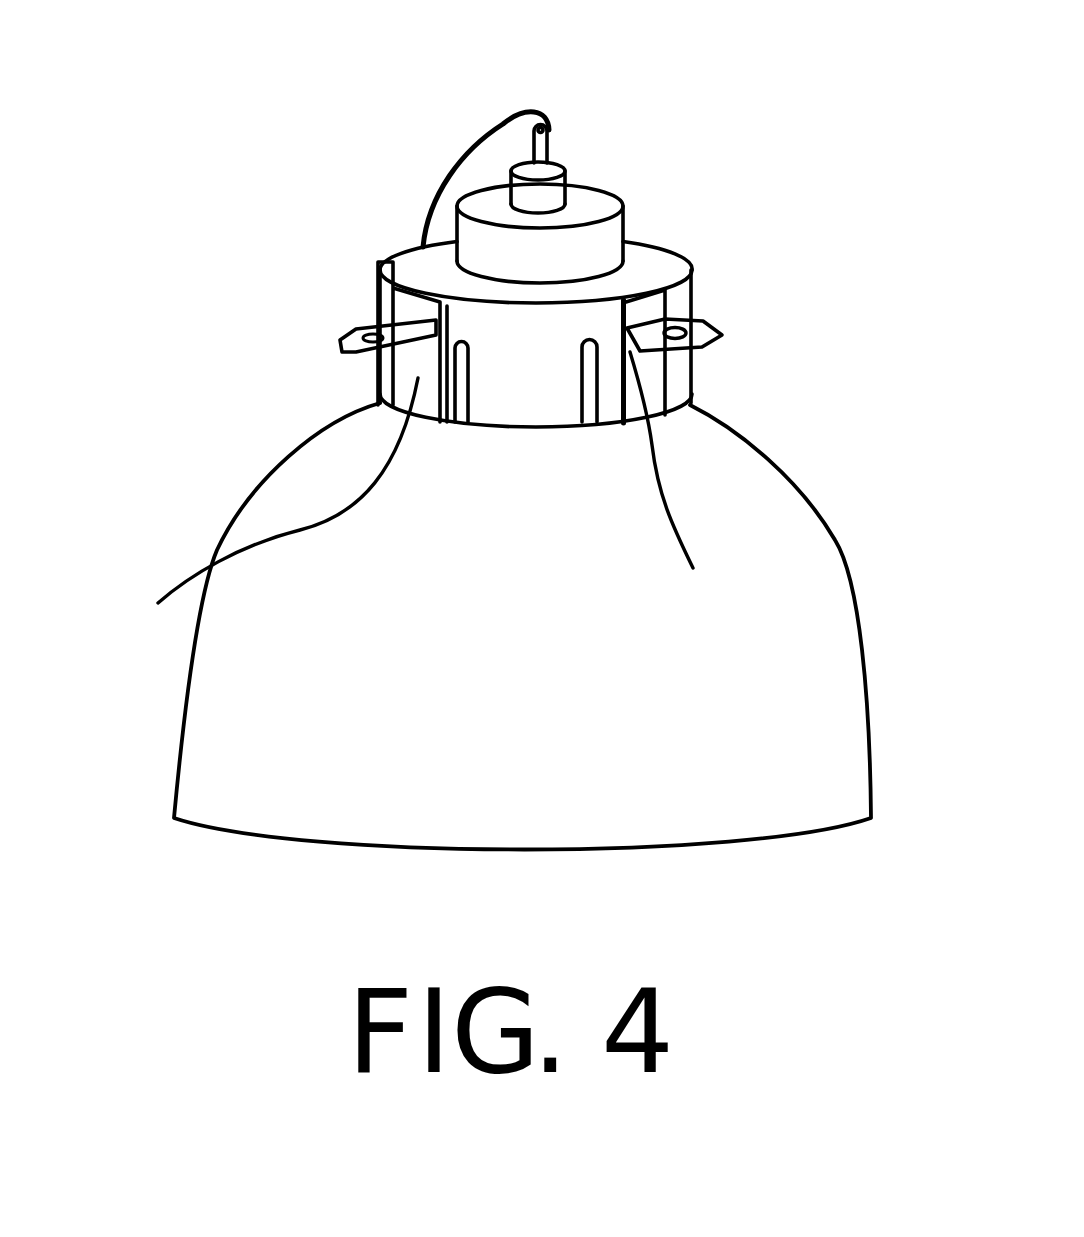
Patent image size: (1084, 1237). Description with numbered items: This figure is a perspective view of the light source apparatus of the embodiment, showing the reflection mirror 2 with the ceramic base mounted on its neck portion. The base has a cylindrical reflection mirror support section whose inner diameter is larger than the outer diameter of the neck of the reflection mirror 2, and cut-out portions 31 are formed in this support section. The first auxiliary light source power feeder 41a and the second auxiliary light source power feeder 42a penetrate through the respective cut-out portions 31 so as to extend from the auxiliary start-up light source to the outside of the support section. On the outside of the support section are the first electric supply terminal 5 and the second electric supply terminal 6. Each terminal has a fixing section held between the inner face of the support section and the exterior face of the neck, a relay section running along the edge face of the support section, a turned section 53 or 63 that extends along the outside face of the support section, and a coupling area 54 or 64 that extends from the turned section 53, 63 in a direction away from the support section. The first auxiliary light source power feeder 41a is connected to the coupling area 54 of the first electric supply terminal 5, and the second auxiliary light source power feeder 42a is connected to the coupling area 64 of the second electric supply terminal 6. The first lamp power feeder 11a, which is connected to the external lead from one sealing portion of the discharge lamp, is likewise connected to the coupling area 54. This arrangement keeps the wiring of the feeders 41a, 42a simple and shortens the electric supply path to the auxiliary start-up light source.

The reflection mirror 2 is at (808, 620).
The first lamp power feeder 11a is at (447, 167).
The cut-out portions 31 is at (440, 545).
The first auxiliary light source power feeder 41a is at (250, 507).
The second auxiliary light source power feeder 42a is at (694, 485).
The first electric supply terminal 5 is at (285, 340).
The turned section 53 is at (405, 381).
The coupling area 54 is at (357, 332).
The second electric supply terminal 6 is at (767, 346).
The turned section 63 is at (657, 392).
The coupling area 64 is at (718, 330).